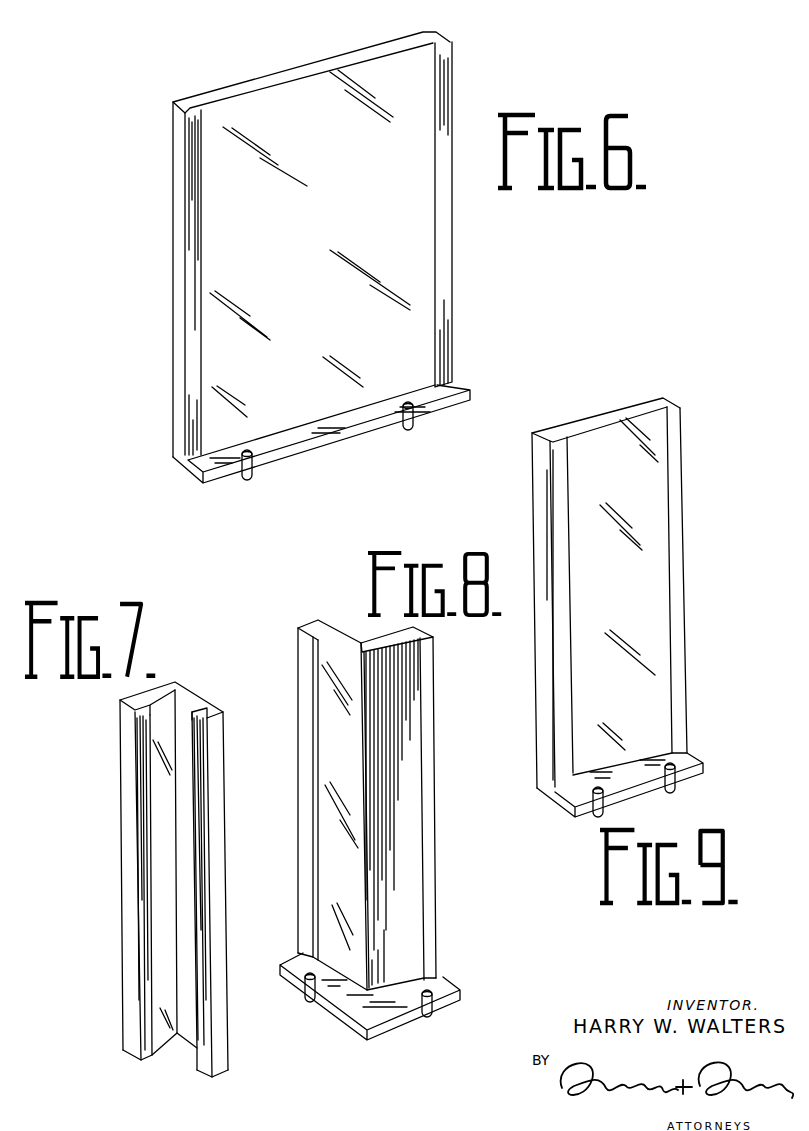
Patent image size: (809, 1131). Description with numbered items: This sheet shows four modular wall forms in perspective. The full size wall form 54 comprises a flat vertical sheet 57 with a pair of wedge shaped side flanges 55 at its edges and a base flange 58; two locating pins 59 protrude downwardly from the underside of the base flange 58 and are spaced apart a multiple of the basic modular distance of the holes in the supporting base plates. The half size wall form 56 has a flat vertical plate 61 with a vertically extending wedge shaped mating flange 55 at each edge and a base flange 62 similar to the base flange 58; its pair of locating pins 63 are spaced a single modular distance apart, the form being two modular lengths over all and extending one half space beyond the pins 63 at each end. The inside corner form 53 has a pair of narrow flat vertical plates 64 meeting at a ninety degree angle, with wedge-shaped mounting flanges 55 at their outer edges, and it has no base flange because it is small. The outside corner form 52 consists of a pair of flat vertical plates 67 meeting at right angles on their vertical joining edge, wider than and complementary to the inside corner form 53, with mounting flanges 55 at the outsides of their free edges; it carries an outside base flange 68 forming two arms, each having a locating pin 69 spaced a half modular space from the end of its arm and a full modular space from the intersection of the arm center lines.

In FIG. 8, the outside corner form 52 is at (442, 746).
In FIG. 7, the inside corner form 53 is at (205, 693).
In FIG. 6, the full size wall form 54 is at (460, 300).
In FIG. 6, the wedge shaped flange 55 is at (448, 104).
In FIG. 7, the wedge shaped flange 55 is at (138, 806).
In FIG. 8, the wedge shaped flange 55 is at (307, 806).
In FIG. 9, the wedge shaped flange 55 is at (688, 537).
In FIG. 9, the half size wall form 56 is at (690, 645).
In FIG. 6, the flat vertical sheet 57 is at (333, 62).
In FIG. 6, the base flange 58 is at (458, 392).
In FIG. 6, the locating pins 59 is at (414, 423).
In FIG. 9, the flat vertical plate 61 is at (615, 407).
In FIG. 9, the base flange 62 is at (702, 763).
In FIG. 9, the locating pins 63 is at (677, 791).
In FIG. 7, the narrow flat vertical plates 64 is at (132, 700).
In FIG. 8, the flat vertical plates 67 is at (380, 634).
In FIG. 8, the outside base flange 68 is at (389, 1005).
In FIG. 8, the locating pins 69 is at (434, 1013).